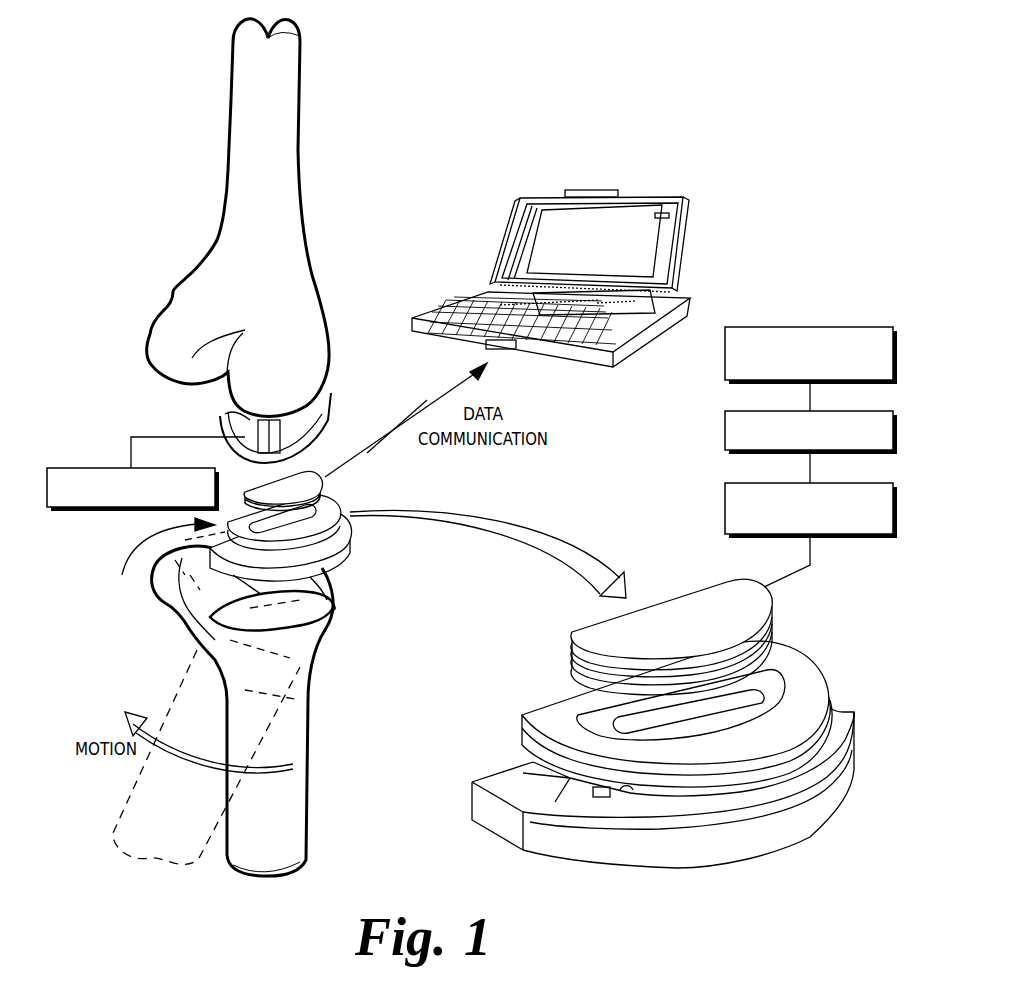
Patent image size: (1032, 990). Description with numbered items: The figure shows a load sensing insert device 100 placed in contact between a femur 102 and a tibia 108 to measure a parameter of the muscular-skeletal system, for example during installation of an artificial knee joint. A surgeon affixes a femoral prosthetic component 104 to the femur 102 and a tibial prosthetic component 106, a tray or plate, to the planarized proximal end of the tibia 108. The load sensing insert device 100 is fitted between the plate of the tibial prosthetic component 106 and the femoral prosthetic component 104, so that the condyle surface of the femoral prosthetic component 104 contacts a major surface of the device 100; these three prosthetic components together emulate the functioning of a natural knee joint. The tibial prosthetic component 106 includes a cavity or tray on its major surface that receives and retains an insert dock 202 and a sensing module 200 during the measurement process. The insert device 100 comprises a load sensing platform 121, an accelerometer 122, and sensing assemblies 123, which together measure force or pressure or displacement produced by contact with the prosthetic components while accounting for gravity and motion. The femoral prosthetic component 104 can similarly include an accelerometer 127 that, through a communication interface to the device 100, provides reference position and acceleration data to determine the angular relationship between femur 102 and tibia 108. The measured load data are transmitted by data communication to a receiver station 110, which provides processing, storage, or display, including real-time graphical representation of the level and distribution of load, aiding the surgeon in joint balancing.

The femur 102 is at (296, 200).
The femoral prosthetic component 104 is at (333, 424).
The tibia 108 is at (228, 852).
The load sensing insert device 100 is at (200, 586).
The receiver station 110 is at (660, 200).
The sensing assemblies 123 is at (725, 358).
The accelerometer 122 is at (725, 432).
The load sensing platform 121 is at (725, 506).
The accelerometer 127 is at (96, 468).
The sensing module 200 is at (598, 638).
The insert dock 202 is at (555, 718).
The tibial prosthetic component 106 is at (490, 783).